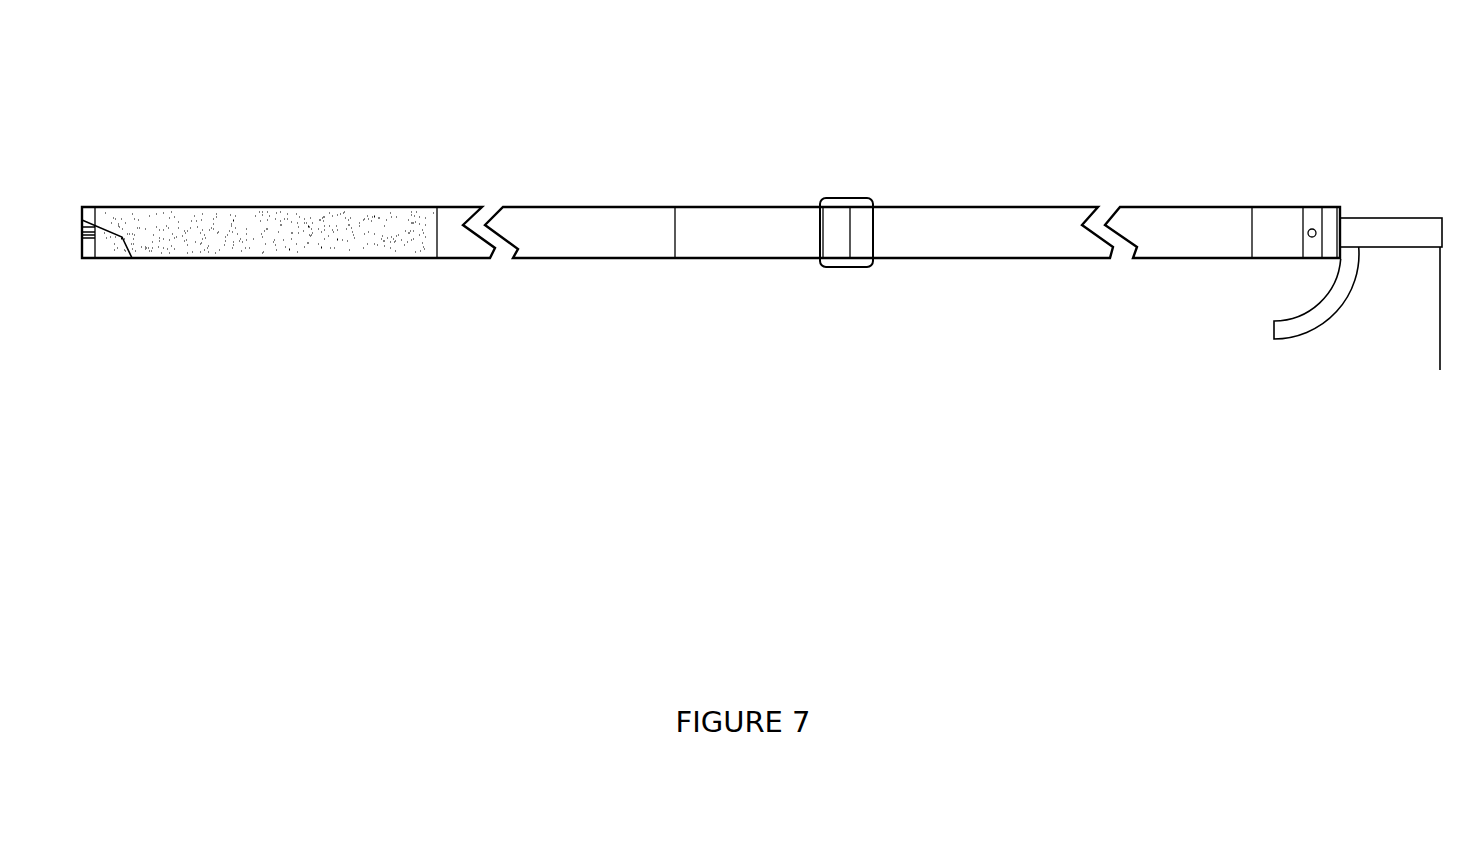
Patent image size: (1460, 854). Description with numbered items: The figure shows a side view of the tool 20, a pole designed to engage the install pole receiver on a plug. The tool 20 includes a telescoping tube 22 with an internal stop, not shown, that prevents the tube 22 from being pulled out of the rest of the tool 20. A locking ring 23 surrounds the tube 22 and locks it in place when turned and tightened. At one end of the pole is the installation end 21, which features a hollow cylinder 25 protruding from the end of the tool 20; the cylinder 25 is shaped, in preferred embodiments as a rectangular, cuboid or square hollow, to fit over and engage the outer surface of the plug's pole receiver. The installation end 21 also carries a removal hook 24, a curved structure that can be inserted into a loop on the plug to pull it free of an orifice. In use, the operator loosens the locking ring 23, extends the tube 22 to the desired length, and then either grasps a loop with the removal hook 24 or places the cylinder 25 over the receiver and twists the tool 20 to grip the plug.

The tool 20 is at (769, 267).
The installation end 21 is at (1379, 230).
The telescoping tube 22 is at (928, 249).
The locking ring 23 is at (852, 198).
The removal hook 24 is at (1310, 316).
The cylinder 25 is at (1441, 326).